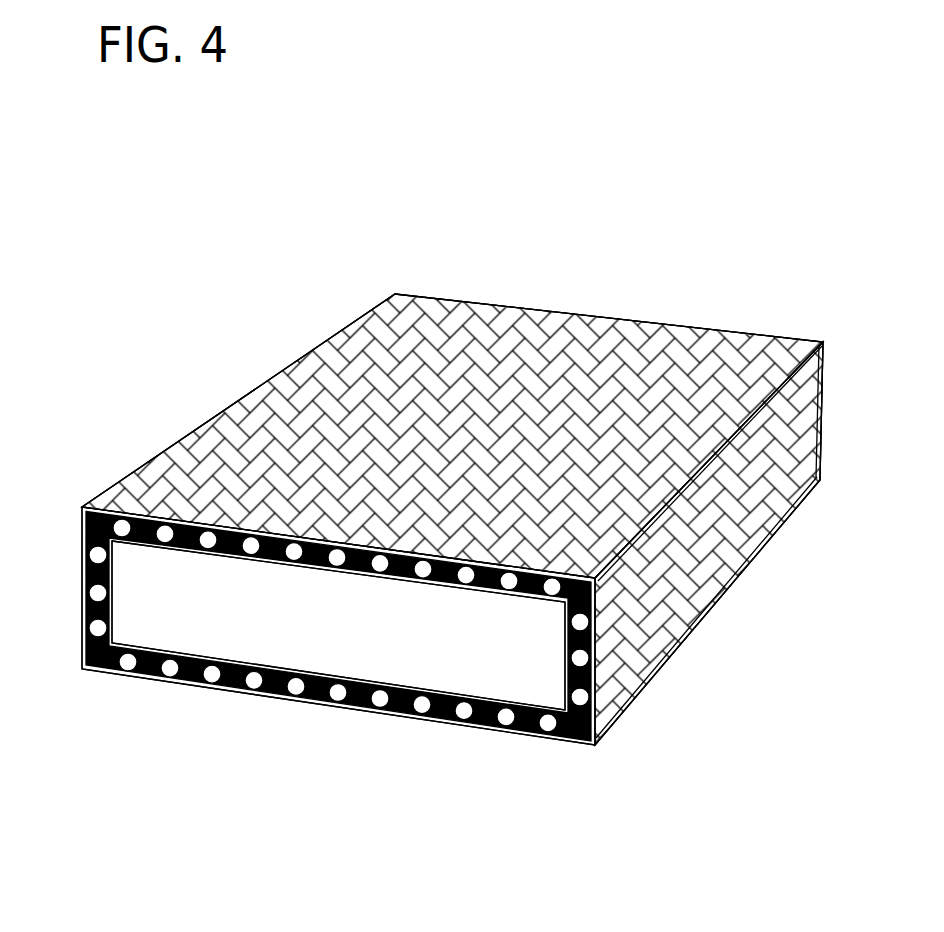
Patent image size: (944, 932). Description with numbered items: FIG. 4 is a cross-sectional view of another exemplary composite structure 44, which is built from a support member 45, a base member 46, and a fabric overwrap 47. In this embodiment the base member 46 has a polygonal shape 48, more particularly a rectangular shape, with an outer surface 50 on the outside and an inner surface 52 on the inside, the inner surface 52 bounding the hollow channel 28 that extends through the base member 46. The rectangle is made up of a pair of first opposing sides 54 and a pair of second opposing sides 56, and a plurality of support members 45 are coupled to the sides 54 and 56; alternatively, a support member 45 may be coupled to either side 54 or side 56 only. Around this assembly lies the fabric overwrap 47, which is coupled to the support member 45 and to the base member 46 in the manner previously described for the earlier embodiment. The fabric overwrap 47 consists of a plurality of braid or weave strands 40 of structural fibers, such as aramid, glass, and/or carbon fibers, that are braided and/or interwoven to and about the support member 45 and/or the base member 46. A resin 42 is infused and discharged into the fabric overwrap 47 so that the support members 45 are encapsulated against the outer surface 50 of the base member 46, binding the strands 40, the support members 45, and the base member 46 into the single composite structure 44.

The channel 28 is at (327, 638).
The braid or weave strands 40 is at (535, 330).
The resin 42 is at (176, 526).
The composite structure 44 is at (310, 315).
The support member 45 is at (126, 528).
The base member 46 is at (88, 608).
The fabric overwrap 47 is at (634, 323).
The polygonal shape 48 is at (220, 716).
The outer surface 50 is at (86, 648).
The inner surface 52 is at (110, 572).
The first opposing sides 54 is at (562, 637).
The second opposing sides 56 is at (440, 587).